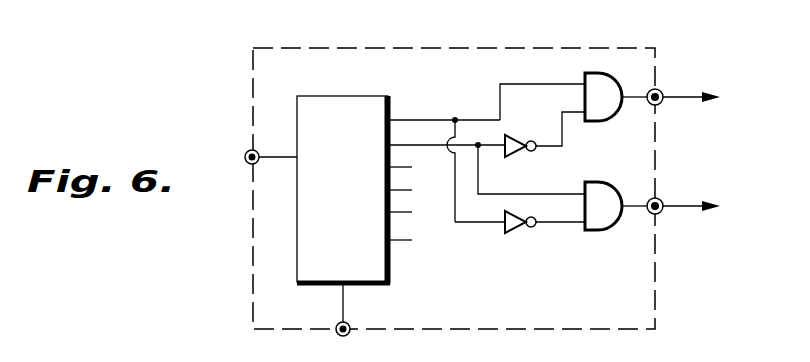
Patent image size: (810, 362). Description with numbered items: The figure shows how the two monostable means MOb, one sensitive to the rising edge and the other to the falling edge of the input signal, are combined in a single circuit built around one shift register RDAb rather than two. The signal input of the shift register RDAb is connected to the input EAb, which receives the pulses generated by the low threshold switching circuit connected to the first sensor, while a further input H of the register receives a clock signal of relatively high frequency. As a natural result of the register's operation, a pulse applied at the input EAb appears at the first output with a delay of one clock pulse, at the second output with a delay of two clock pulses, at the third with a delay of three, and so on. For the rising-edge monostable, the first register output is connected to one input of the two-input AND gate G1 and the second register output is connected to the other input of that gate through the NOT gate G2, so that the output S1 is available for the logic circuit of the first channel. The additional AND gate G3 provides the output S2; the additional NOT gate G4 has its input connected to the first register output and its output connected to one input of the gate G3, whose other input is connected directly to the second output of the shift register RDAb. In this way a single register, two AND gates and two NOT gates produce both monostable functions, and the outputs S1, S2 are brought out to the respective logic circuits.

The monostable circuit MOb is at (417, 13).
The shift register RDAb is at (366, 200).
The input EAb is at (251, 149).
The clock input H is at (352, 310).
The AND gate G1 is at (605, 88).
The NOT gate G2 is at (545, 145).
The additional AND gate G3 is at (605, 197).
The additional NOT gate G4 is at (520, 237).
The output S1 is at (688, 98).
The output S2 is at (688, 211).